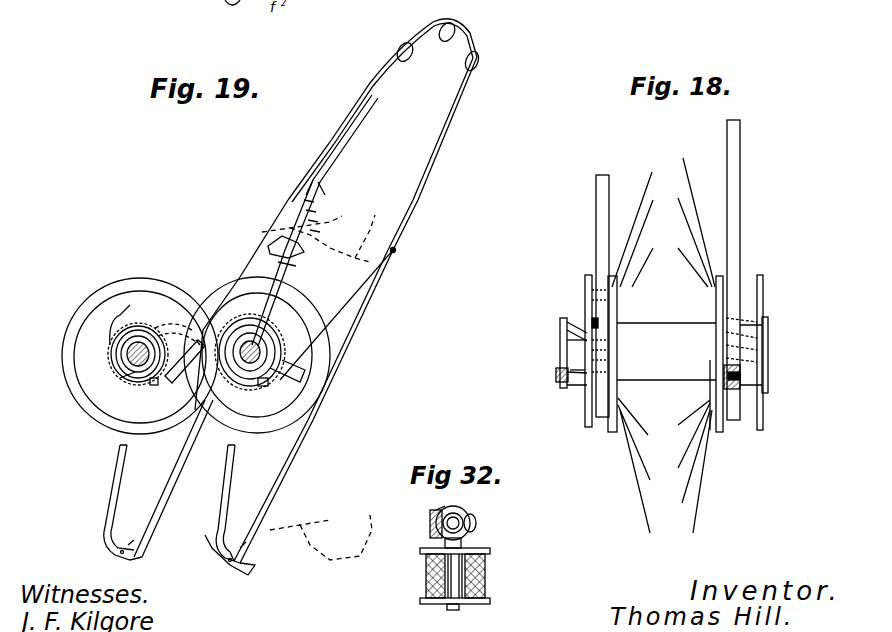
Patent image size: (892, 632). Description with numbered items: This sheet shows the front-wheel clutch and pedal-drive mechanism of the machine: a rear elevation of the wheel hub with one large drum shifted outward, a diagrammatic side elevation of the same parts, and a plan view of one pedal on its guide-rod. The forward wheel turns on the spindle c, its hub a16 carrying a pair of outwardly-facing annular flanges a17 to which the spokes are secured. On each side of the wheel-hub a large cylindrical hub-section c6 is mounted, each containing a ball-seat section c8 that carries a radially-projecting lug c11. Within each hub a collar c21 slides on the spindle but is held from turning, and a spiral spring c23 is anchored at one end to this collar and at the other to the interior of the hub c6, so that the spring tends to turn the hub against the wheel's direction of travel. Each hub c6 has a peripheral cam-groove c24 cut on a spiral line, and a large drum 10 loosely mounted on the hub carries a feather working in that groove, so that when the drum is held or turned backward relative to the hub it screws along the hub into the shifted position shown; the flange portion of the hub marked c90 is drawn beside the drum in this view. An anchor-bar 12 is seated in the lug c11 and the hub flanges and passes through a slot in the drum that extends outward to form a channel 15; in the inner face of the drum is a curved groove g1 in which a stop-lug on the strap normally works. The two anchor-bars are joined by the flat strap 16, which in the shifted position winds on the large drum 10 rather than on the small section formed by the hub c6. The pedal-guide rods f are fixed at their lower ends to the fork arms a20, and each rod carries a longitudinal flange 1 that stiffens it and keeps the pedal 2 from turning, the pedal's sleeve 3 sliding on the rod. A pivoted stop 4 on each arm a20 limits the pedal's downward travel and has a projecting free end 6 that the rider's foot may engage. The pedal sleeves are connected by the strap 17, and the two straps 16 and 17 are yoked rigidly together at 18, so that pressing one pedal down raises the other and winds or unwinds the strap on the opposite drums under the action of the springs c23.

In FIG. 19, the pedal-guide rod f is at (300, 440).
In FIG. 32, the pedal-guide rod f is at (435, 510).
In FIG. 32, the longitudinal flange or rib 1 is at (472, 528).
In FIG. 19, the pedal 2 is at (285, 255).
In FIG. 32, the pedal 2 is at (478, 582).
In FIG. 19, the pedal sleeve portion 3 is at (285, 250).
In FIG. 32, the pedal sleeve portion 3 is at (468, 515).
In FIG. 19, the pivoted stop 4 is at (245, 520).
In FIG. 19, the projecting free end of stop 6 is at (210, 540).
In FIG. 18, the large drum 10 is at (777, 415).
In FIG. 18, the anchor-bar 12 is at (572, 372).
In FIG. 19, the channel 15 is at (268, 383).
In FIG. 18, the channel 15 is at (790, 365).
In FIG. 19, the flexible driving connection or strap 16 is at (398, 295).
In FIG. 32, the flexible driving connection or strap 16 is at (430, 535).
In FIG. 18, the flexible driving connection or strap 16 is at (750, 203).
In FIG. 19, the flexible connection or strap 17 is at (327, 160).
In FIG. 19, the yoke connection 18 is at (396, 250).
In FIG. 18, the hub of forward wheel a16 is at (660, 335).
In FIG. 18, the annular flange a17 is at (628, 287).
In FIG. 19, the fork extension or arm a20 is at (240, 462).
In FIG. 19, the spindle c is at (127, 358).
In FIG. 19, the cylindrical hub-section c6 is at (135, 375).
In FIG. 18, the ball-seat section or runway c8 is at (783, 322).
In FIG. 18, the radially-projecting lug or ear c11 is at (783, 388).
In FIG. 19, the collar c21 is at (140, 345).
In FIG. 19, the spiral spring c23 is at (245, 375).
In FIG. 18, the peripheral cam-groove c24 is at (570, 340).
In FIG. 18, the hub flange c90 is at (720, 418).
In FIG. 19, the groove in drum face g1 is at (280, 370).